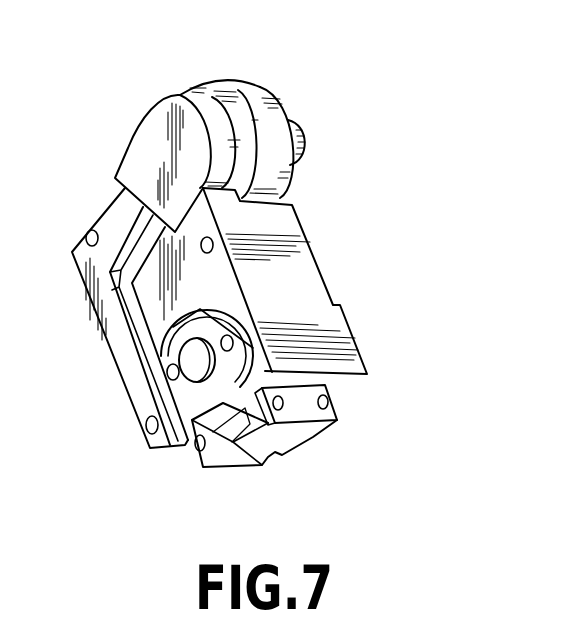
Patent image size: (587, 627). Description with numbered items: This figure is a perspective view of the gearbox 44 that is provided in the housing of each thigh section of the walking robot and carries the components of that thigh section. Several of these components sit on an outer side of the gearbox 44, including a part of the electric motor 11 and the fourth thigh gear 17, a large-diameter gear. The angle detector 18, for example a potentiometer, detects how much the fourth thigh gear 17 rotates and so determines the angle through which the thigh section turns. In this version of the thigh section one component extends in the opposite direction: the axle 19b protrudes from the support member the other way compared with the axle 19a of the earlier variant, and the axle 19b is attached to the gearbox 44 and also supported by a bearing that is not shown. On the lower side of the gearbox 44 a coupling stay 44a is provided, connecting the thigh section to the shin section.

The electric motor 11 is at (198, 398).
The fourth thigh gear 17 is at (235, 118).
The angle detector 18 is at (163, 145).
The axle 19a is at (305, 145).
The axle 19b is at (389, 120).
The gearbox 44 is at (313, 297).
The coupling stay 44a is at (275, 427).